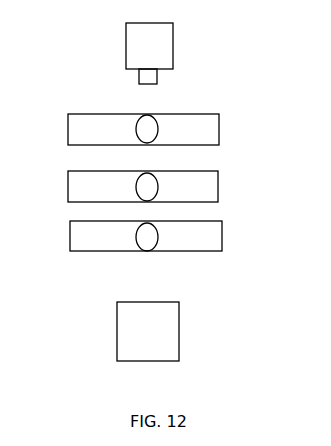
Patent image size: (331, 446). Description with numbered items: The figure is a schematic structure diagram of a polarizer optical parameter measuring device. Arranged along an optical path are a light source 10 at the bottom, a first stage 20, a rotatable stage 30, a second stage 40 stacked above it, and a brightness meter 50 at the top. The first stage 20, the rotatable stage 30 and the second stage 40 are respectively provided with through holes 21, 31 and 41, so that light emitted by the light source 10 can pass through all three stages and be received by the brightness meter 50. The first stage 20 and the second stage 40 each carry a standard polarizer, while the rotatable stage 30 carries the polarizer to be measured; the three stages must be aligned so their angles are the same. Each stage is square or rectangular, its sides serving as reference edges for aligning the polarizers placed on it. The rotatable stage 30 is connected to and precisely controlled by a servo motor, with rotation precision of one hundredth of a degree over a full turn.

The light source 10 is at (150, 340).
The first stage 20 is at (203, 239).
The through hole 21 is at (145, 238).
The rotatable stage 30 is at (203, 188).
The through hole 31 is at (145, 188).
The second stage 40 is at (203, 133).
The through hole 41 is at (146, 131).
The brightness meter 50 is at (153, 50).